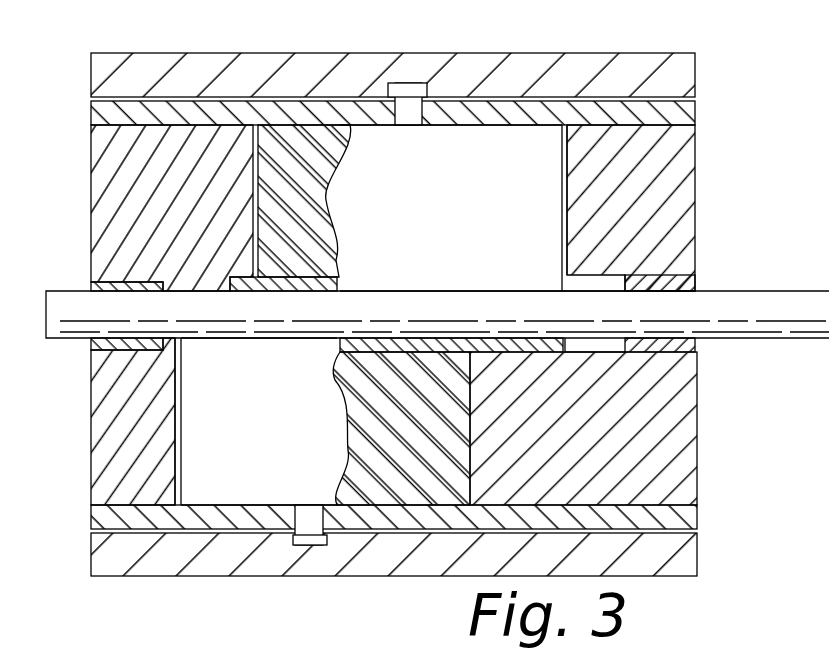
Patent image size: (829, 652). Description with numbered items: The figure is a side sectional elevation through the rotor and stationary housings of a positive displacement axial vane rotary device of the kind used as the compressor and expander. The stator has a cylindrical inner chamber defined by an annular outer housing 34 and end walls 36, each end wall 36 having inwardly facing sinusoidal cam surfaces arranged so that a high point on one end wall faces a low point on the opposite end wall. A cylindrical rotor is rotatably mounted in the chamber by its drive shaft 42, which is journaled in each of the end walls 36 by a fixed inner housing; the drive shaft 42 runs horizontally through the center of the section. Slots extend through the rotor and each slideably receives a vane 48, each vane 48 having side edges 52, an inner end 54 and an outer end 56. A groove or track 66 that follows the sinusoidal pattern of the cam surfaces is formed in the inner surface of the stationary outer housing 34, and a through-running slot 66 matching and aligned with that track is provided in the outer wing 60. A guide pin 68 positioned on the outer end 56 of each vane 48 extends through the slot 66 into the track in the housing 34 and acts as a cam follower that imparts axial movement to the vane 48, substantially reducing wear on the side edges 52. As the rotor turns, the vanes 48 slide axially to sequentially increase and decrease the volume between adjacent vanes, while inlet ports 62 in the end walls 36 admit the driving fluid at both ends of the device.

The annular outer housing 34 is at (222, 53).
The end wall 36 is at (91, 226).
The drive shaft 42 is at (738, 291).
The vane 48 is at (412, 205).
The side edge 52 is at (562, 180).
The inner end 54 is at (410, 291).
The outer end 56 is at (470, 126).
The outer wing 60 is at (91, 115).
The inlet port 62 is at (278, 292).
The track 66 is at (398, 110).
The guide pin 68 is at (414, 95).